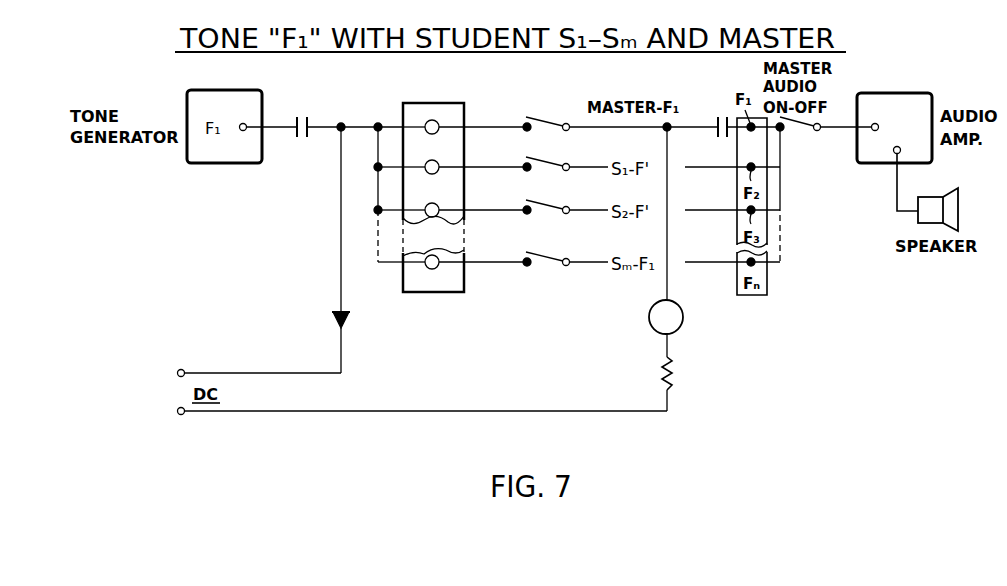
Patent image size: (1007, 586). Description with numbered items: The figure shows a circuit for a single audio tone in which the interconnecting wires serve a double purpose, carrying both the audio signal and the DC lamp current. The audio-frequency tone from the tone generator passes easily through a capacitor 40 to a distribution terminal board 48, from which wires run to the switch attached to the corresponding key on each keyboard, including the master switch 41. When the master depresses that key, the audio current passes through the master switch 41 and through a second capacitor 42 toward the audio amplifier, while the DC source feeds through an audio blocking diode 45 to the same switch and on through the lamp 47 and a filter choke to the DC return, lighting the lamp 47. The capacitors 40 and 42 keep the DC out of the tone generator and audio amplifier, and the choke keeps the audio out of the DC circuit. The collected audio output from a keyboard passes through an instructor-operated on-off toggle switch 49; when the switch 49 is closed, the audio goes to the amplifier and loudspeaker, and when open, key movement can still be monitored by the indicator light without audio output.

The capacitor 40 is at (295, 129).
The master F1 switch 41 is at (529, 118).
The second capacitor 42 is at (717, 131).
The audio blocking diode 45 is at (349, 323).
The lamp 47 is at (649, 318).
The distribution terminal board 48 is at (443, 288).
The on-off toggle switch 49 is at (816, 132).